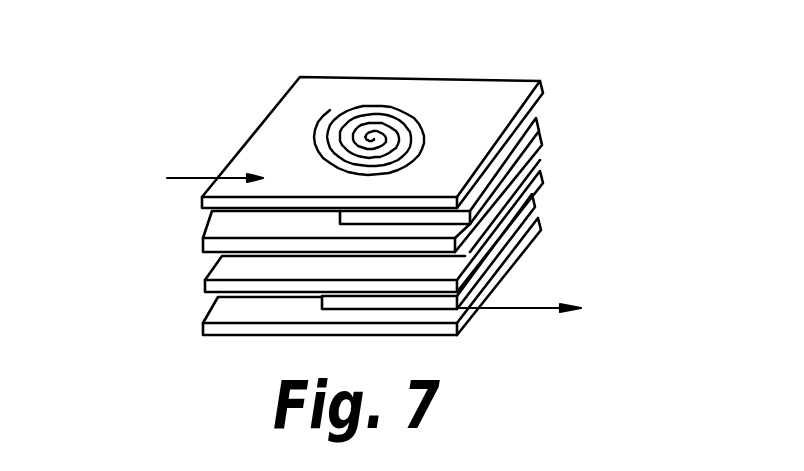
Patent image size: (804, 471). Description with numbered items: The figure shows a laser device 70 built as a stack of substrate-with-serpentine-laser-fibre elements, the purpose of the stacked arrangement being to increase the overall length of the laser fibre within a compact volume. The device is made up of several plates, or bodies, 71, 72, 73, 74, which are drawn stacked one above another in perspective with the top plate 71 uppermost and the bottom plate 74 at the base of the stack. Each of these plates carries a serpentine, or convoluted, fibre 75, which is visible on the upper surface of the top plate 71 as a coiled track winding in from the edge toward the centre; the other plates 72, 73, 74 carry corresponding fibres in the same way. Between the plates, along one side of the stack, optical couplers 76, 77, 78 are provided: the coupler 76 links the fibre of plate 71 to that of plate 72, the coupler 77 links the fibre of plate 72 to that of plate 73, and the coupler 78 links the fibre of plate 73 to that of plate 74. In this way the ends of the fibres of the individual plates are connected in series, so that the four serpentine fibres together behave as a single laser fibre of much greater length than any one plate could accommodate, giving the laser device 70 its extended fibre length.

The laser device 70 is at (155, 239).
The plate 71 is at (501, 87).
The plate 72 is at (210, 220).
The plate 73 is at (210, 267).
The plate 74 is at (219, 331).
The serpentine fibre 75 is at (294, 178).
The optical coupler 76 is at (534, 116).
The optical coupler 77 is at (471, 232).
The optical coupler 78 is at (532, 191).